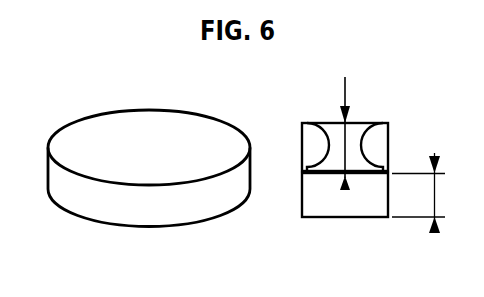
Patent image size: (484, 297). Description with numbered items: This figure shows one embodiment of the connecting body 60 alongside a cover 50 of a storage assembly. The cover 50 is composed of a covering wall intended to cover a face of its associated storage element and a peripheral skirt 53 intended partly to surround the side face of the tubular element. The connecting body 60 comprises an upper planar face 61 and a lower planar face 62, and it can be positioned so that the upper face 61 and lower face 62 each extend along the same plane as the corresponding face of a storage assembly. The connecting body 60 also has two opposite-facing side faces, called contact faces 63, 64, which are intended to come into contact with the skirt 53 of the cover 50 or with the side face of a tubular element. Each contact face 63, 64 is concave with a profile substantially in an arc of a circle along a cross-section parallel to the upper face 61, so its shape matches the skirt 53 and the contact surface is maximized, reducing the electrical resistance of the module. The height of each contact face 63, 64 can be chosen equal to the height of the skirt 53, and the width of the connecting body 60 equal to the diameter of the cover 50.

The cover 50 is at (149, 160).
The peripheral skirt 53 is at (150, 212).
The connecting body 60 is at (345, 163).
The upper planar face 61 is at (344, 117).
The lower planar face 62 is at (345, 224).
The contact face 63 is at (304, 145).
The contact face 64 is at (386, 145).